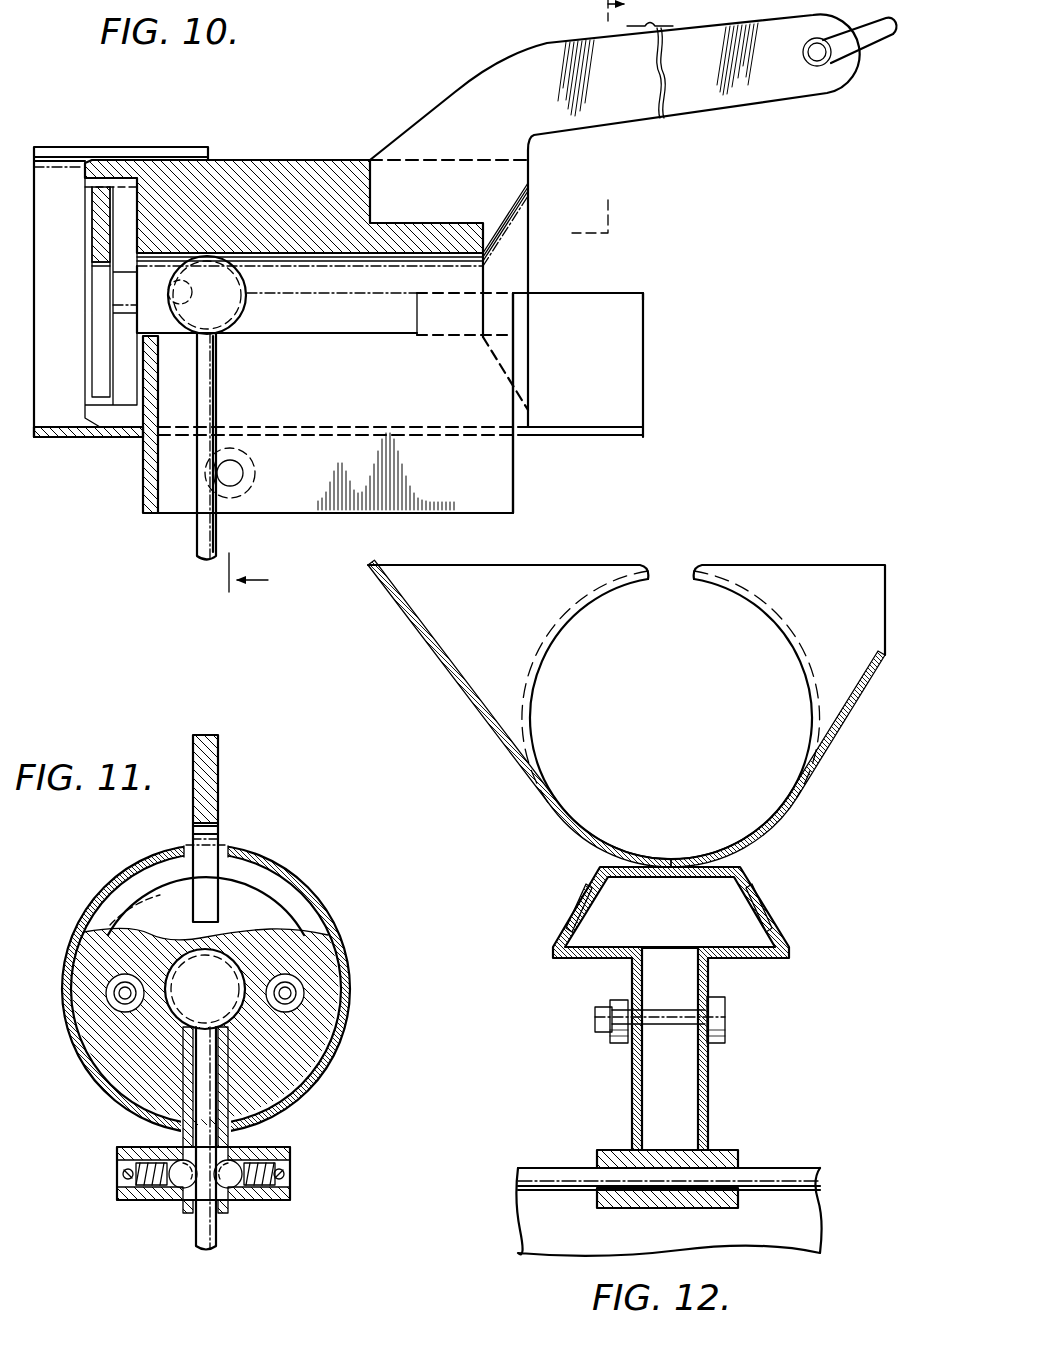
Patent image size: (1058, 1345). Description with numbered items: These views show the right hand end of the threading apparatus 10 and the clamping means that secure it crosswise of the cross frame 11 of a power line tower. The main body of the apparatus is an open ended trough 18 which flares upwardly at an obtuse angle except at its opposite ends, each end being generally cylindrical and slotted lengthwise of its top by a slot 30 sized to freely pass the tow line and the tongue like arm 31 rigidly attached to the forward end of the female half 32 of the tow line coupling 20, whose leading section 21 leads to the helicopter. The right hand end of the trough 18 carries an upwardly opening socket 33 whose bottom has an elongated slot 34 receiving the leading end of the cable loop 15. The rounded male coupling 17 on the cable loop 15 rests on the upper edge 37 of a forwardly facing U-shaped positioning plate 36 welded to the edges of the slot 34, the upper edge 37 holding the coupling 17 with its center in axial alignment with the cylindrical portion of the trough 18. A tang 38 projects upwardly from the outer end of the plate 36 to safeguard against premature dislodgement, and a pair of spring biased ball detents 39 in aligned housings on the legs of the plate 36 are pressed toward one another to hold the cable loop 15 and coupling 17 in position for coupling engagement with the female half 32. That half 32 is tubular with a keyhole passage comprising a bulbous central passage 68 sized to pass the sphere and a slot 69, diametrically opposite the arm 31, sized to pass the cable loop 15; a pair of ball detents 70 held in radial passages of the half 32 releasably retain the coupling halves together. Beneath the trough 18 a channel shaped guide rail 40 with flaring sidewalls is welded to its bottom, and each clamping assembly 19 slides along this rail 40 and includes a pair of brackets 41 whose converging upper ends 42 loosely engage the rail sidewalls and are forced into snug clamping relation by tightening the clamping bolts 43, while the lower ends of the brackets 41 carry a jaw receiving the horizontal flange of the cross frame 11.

In FIG. 10, the threading apparatus 10 is at (176, 280).
In FIG. 10, the cross frame 11 is at (454, 300).
In FIG. 12, the cross frame 11 is at (812, 1160).
In FIG. 10, the cable loop 15 is at (222, 533).
In FIG. 11, the cable loop 15 is at (220, 1232).
In FIG. 10, the male coupling 17 is at (247, 277).
In FIG. 11, the male coupling 17 is at (225, 958).
In FIG. 10, the trough 18 is at (64, 440).
In FIG. 11, the trough 18 is at (356, 1002).
In FIG. 12, the trough 18 is at (468, 722).
In FIG. 12, the clamps 19 is at (722, 1122).
In FIG. 10, the tow line coupling 20 is at (301, 128).
In FIG. 10, the leading section of the tow line 21 is at (886, 42).
In FIG. 10, the slot 30 is at (60, 150).
In FIG. 11, the slot 30 is at (222, 846).
In FIG. 12, the slot 30 is at (673, 585).
In FIG. 10, the arm 31 is at (446, 91).
In FIG. 11, the arm 31 is at (216, 770).
In FIG. 10, the female half of coupling 32 is at (341, 158).
In FIG. 11, the female half of coupling 32 is at (330, 946).
In FIG. 10, the socket 33 is at (612, 430).
In FIG. 11, the slot 34 is at (183, 1143).
In FIG. 10, the U-shaped positioning plate 36 is at (143, 486).
In FIG. 11, the U-shaped positioning plate 36 is at (229, 1095).
In FIG. 10, the upper edge 37 is at (280, 333).
In FIG. 10, the tang 38 is at (417, 311).
In FIG. 10, the ball detents 39 is at (234, 470).
In FIG. 11, the ball detents 39 is at (212, 1190).
In FIG. 12, the guide rail 40 is at (742, 868).
In FIG. 12, the brackets 41 is at (698, 1079).
In FIG. 12, the upper ends of brackets 42 is at (578, 903).
In FIG. 12, the clamping bolts 43 is at (720, 1015).
In FIG. 10, the central passage 68 is at (425, 257).
In FIG. 10, the slot 69 is at (517, 398).
In FIG. 11, the ball detents 70 is at (172, 982).